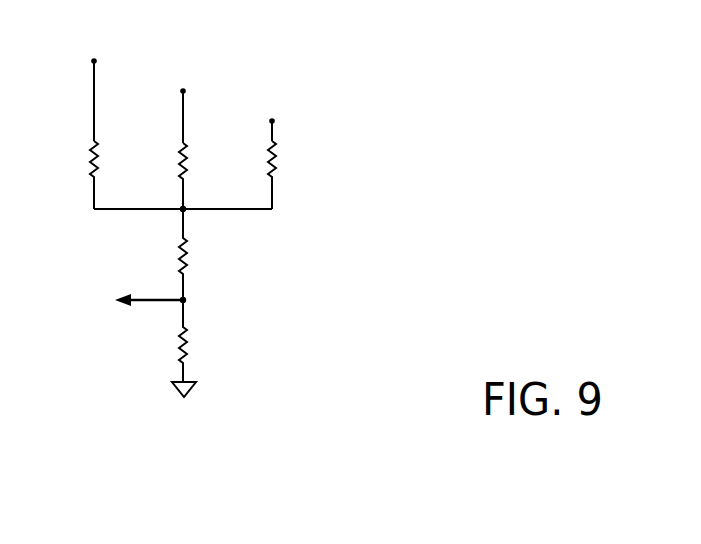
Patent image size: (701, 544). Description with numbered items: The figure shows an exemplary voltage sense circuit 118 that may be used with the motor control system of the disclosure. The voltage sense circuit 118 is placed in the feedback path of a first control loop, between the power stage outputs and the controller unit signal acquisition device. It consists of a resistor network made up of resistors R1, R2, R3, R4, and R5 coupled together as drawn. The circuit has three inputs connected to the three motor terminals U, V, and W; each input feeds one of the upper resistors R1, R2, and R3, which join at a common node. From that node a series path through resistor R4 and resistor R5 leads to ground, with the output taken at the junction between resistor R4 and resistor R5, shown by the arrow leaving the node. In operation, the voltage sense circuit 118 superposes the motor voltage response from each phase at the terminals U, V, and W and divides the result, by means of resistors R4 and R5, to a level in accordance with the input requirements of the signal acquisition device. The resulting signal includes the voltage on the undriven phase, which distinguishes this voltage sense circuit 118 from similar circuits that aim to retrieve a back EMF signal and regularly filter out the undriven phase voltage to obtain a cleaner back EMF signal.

The voltage sense circuit 118 is at (452, 168).
The resistor R1 is at (115, 175).
The resistor R2 is at (203, 176).
The resistor R3 is at (292, 175).
The resistor R4 is at (203, 254).
The resistor R5 is at (203, 341).
The motor terminal U is at (95, 84).
The motor terminal V is at (185, 100).
The motor terminal W is at (275, 115).